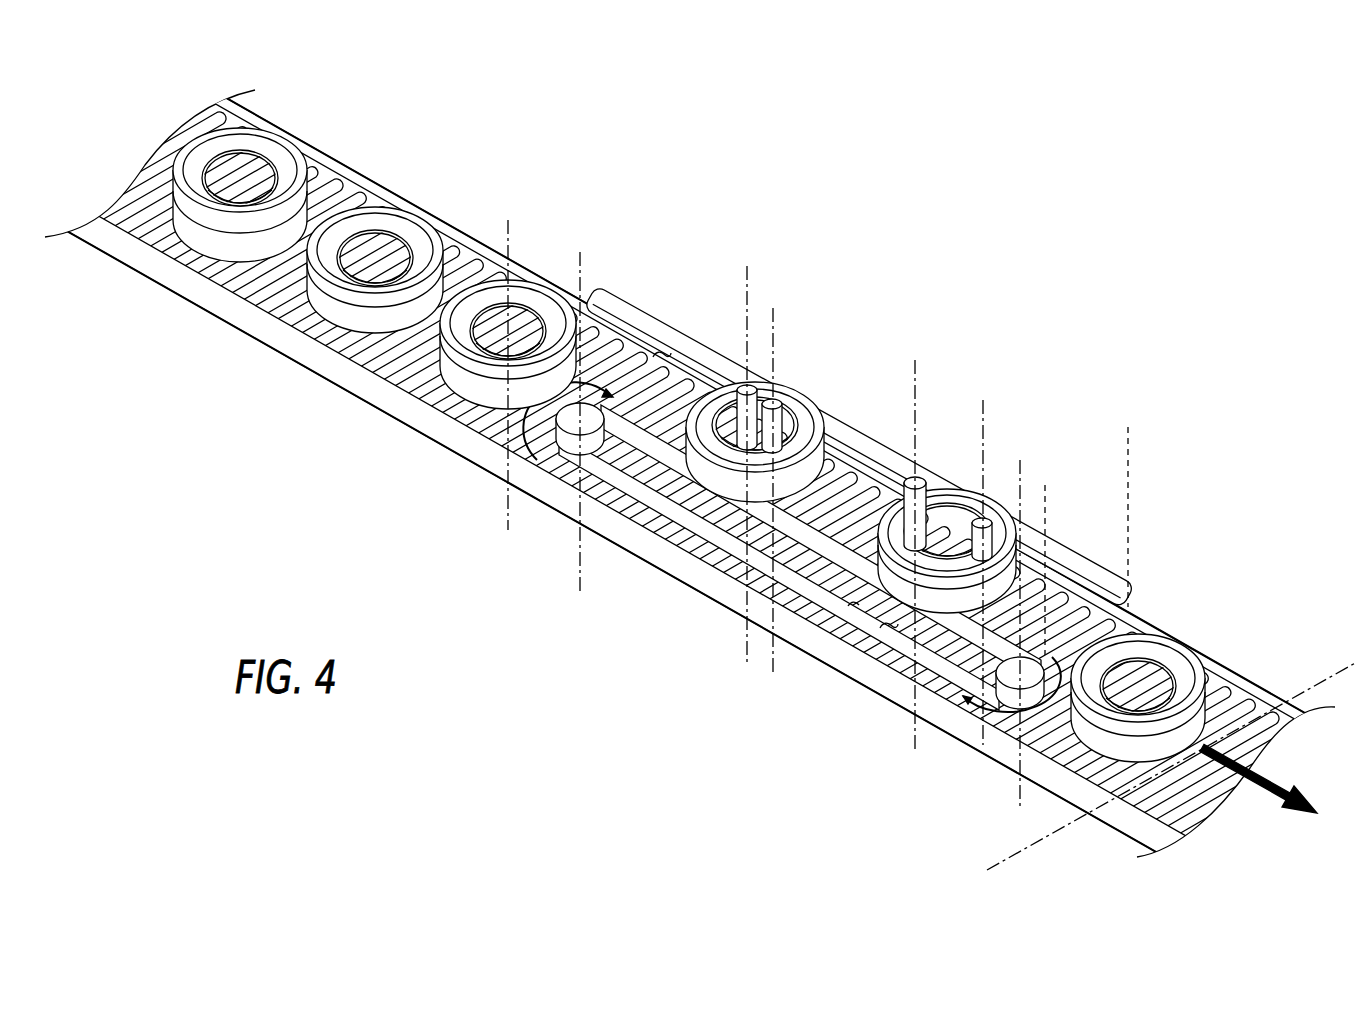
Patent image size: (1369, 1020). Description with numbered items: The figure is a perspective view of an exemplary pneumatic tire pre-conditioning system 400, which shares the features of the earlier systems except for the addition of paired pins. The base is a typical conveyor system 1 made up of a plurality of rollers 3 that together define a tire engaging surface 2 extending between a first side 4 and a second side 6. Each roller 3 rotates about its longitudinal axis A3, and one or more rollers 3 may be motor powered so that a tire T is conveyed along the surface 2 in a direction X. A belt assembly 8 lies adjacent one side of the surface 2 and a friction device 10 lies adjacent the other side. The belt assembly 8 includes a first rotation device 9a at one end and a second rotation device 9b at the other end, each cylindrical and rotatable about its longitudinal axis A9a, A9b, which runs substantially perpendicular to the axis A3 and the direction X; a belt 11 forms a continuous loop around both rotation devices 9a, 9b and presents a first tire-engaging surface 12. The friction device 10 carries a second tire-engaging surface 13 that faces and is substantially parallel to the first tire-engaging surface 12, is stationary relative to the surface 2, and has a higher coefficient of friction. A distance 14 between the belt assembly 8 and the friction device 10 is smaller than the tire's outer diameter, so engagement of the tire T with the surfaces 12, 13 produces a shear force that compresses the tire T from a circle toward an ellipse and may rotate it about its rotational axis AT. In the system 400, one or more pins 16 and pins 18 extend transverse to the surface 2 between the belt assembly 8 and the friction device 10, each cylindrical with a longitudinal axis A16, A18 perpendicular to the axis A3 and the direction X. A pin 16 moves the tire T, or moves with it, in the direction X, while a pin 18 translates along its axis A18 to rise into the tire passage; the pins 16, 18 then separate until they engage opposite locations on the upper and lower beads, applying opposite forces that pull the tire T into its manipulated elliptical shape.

The conveyor system 1 is at (106, 136).
The tire T is at (262, 150).
The tire engaging surface 2 is at (317, 178).
The roller 3 is at (1171, 800).
The first side 4 is at (232, 312).
The second side 6 is at (422, 206).
The belt assembly 8 is at (719, 533).
The first rotation device 9a is at (572, 432).
The second rotation device 9b is at (1016, 692).
The friction device 10 is at (647, 296).
The belt 11 is at (850, 606).
The first tire-engaging surface 12 is at (886, 628).
The second tire-engaging surface 13 is at (668, 352).
The distance 14 is at (1123, 462).
The pin 16 is at (777, 398).
The pin 18 is at (746, 383).
The pneumatic tire pre-conditioning system 400 is at (958, 170).
The rotational axis AT is at (512, 361).
The first longitudinal axis A9a is at (587, 405).
The second longitudinal axis A9b is at (1026, 617).
The longitudinal axis A16 is at (886, 511).
The longitudinal axis A18 is at (840, 491).
The longitudinal axis A3 is at (1334, 670).
The direction X is at (1287, 787).